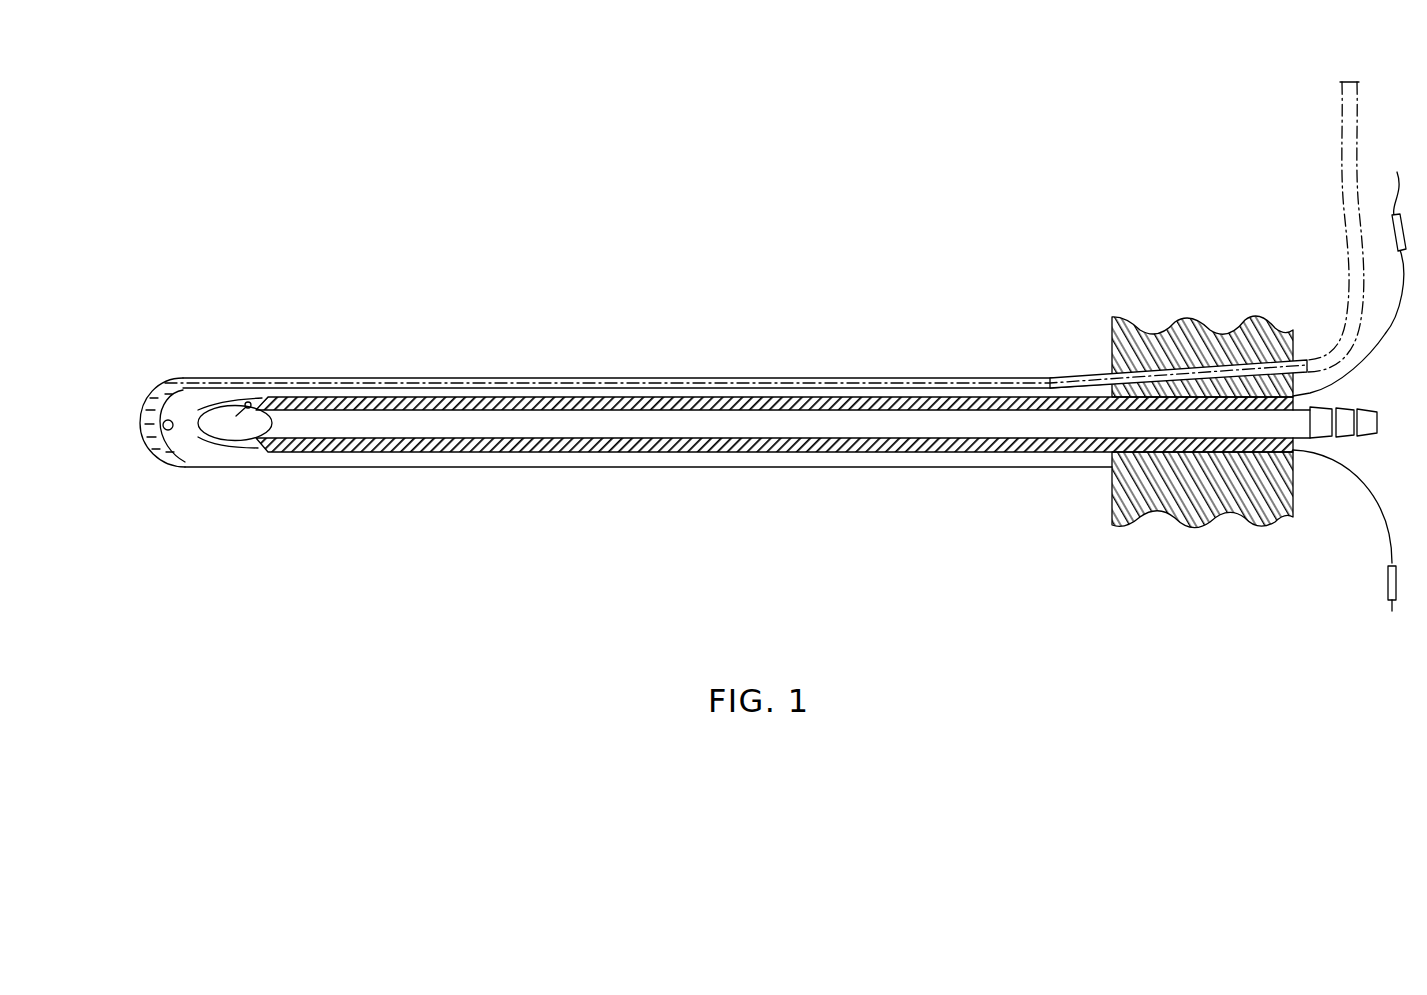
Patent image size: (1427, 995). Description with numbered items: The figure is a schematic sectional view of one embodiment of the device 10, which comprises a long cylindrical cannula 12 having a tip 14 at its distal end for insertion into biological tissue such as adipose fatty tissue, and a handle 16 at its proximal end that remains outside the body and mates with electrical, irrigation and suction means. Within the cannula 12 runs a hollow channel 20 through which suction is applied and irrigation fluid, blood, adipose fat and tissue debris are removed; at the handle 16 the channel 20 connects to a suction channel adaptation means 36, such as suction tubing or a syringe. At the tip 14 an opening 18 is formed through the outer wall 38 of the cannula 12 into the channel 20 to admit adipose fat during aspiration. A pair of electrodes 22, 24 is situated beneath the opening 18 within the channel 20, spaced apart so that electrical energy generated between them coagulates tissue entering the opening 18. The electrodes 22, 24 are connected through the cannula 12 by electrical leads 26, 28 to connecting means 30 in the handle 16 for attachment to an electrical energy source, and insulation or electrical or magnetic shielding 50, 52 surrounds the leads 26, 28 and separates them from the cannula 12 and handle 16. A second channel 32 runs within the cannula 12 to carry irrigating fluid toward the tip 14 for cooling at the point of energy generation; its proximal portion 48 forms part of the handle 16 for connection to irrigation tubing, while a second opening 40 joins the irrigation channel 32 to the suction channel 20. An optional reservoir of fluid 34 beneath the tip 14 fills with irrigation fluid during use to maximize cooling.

The device 10 is at (462, 553).
The cannula 12 is at (533, 467).
The tip 14 is at (122, 412).
The handle 16 is at (1197, 513).
The opening 18 is at (248, 404).
The hollow channel 20 is at (557, 413).
The electrode 22 is at (228, 443).
The electrode 24 is at (236, 403).
The electrical lead 26 is at (1383, 525).
The electrical lead 28 is at (1385, 334).
The connecting means 30 is at (1394, 212).
The second channel 32 is at (860, 382).
The reservoir of fluid 34 is at (160, 387).
The suction channel adaptation means 36 is at (1368, 437).
The outer wall 38 is at (290, 467).
The second opening 40 is at (175, 455).
The proximal portion of the irrigation channel 48 is at (1338, 173).
The shielding 50 is at (383, 452).
The shielding 52 is at (365, 400).